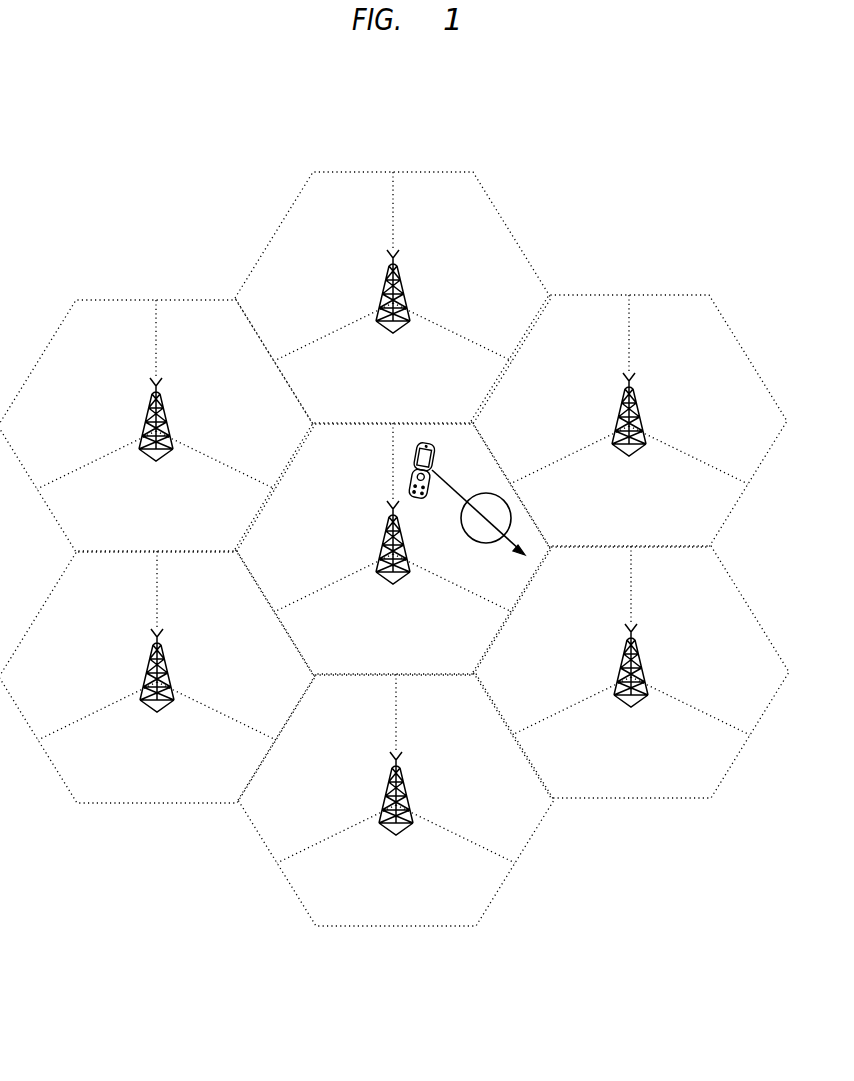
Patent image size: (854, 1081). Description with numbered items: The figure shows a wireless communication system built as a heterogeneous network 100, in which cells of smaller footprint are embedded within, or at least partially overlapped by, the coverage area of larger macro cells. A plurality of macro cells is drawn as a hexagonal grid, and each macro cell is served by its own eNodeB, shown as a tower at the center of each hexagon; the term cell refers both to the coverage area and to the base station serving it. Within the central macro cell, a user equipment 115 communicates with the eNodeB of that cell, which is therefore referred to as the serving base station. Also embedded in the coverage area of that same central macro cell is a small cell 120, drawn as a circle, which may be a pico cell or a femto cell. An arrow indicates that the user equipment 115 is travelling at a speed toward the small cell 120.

The heterogeneous network 100 is at (698, 150).
The user equipment 115 is at (436, 469).
The small cell 120 is at (484, 544).